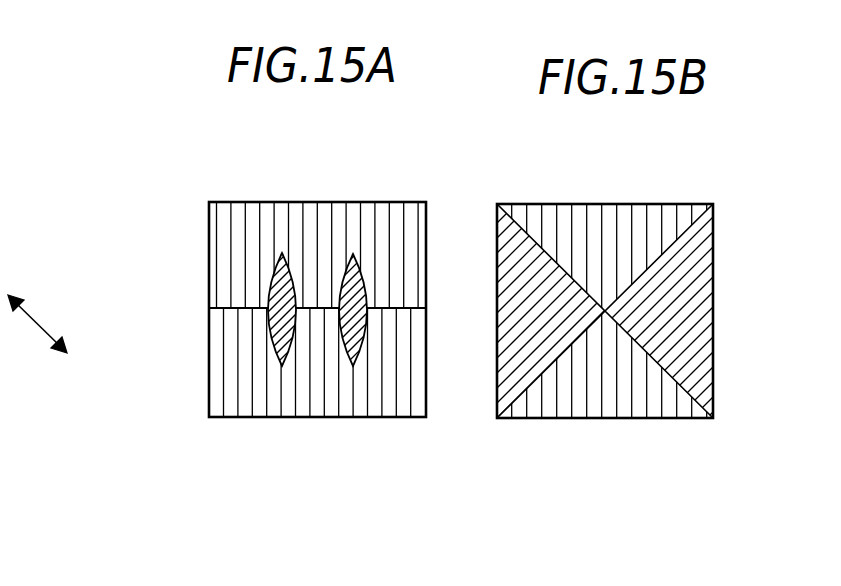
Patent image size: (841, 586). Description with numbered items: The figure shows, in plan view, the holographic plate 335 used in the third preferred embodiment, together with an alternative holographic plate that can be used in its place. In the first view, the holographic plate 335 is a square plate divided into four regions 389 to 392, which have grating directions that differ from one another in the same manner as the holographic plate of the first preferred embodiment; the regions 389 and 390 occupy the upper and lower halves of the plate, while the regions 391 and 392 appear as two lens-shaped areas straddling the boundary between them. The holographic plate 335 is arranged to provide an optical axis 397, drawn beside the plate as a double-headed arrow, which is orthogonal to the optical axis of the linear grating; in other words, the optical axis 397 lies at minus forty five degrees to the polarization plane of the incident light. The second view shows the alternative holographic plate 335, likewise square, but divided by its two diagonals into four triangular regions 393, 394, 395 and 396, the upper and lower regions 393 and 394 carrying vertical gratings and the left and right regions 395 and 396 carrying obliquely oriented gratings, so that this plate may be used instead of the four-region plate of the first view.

In FIG. 15A, the holographic plate 335 is at (308, 341).
In FIG. 15B, the holographic plate 335 is at (613, 351).
In FIG. 15A, the region 389 is at (332, 206).
In FIG. 15A, the region 390 is at (363, 406).
In FIG. 15A, the region 391 is at (270, 327).
In FIG. 15A, the region 392 is at (355, 280).
In FIG. 15B, the upper quadrant region 393 is at (595, 215).
In FIG. 15B, the lower quadrant region 394 is at (620, 405).
In FIG. 15B, the left quadrant region 395 is at (513, 340).
In FIG. 15B, the right quadrant region 396 is at (693, 293).
In FIG. 15A, the optical axis 397 is at (42, 318).